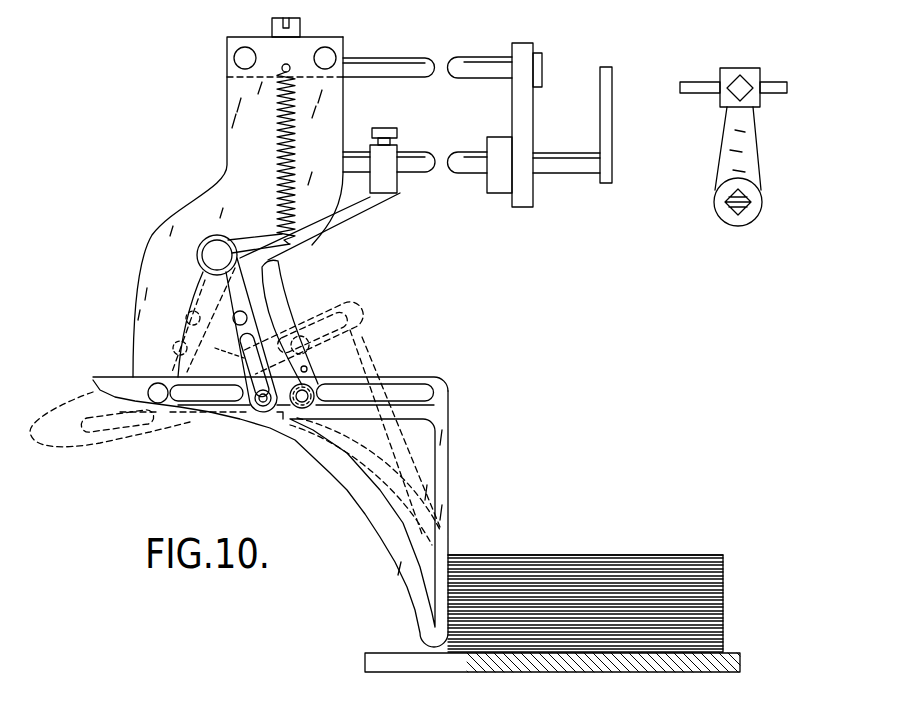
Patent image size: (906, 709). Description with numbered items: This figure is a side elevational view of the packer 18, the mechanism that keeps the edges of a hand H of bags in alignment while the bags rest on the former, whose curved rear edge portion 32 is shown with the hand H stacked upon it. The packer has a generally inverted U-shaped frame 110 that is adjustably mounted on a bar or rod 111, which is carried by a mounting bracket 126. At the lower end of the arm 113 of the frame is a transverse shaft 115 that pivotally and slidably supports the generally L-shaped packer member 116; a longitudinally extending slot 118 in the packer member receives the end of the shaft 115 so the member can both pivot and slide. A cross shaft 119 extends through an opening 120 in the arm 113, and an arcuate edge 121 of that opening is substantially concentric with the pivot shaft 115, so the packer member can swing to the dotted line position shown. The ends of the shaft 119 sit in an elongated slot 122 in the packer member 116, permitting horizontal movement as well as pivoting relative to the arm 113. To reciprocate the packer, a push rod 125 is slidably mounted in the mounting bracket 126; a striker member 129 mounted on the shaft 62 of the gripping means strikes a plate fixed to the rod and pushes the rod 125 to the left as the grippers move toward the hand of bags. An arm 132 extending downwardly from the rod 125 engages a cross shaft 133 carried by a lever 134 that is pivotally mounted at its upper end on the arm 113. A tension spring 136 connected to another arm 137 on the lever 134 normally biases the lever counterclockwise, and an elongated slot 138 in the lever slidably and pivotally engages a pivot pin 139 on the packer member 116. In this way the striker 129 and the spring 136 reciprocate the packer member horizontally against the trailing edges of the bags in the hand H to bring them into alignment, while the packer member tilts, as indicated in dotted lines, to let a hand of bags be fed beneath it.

The packer 18 is at (422, 50).
The inverted U-shaped frame 110 is at (227, 133).
The bar or rod 111 is at (476, 58).
The arm 113 is at (334, 108).
The transverse shaft 115 is at (158, 403).
The packer member 116 is at (448, 462).
The longitudinally extending slot 118 is at (208, 402).
The cross shaft 119 is at (299, 410).
The opening 120 is at (272, 318).
The arcuate edge 121 is at (307, 367).
The elongated slot 122 is at (408, 393).
The shaft or rod 125 is at (570, 174).
The mounting bracket 126 is at (533, 108).
The striker member 129 is at (719, 100).
The arm 132 is at (362, 218).
The cross shaft 133 is at (232, 320).
The lever 134 is at (230, 295).
The tension spring 136 is at (278, 166).
The arm 137 is at (252, 240).
The elongated slot 138 is at (247, 353).
The pivot pin 139 is at (258, 417).
The transverse shaft 62 is at (714, 202).
The rear edge portion 32 is at (563, 662).
The hand of bags H is at (564, 555).